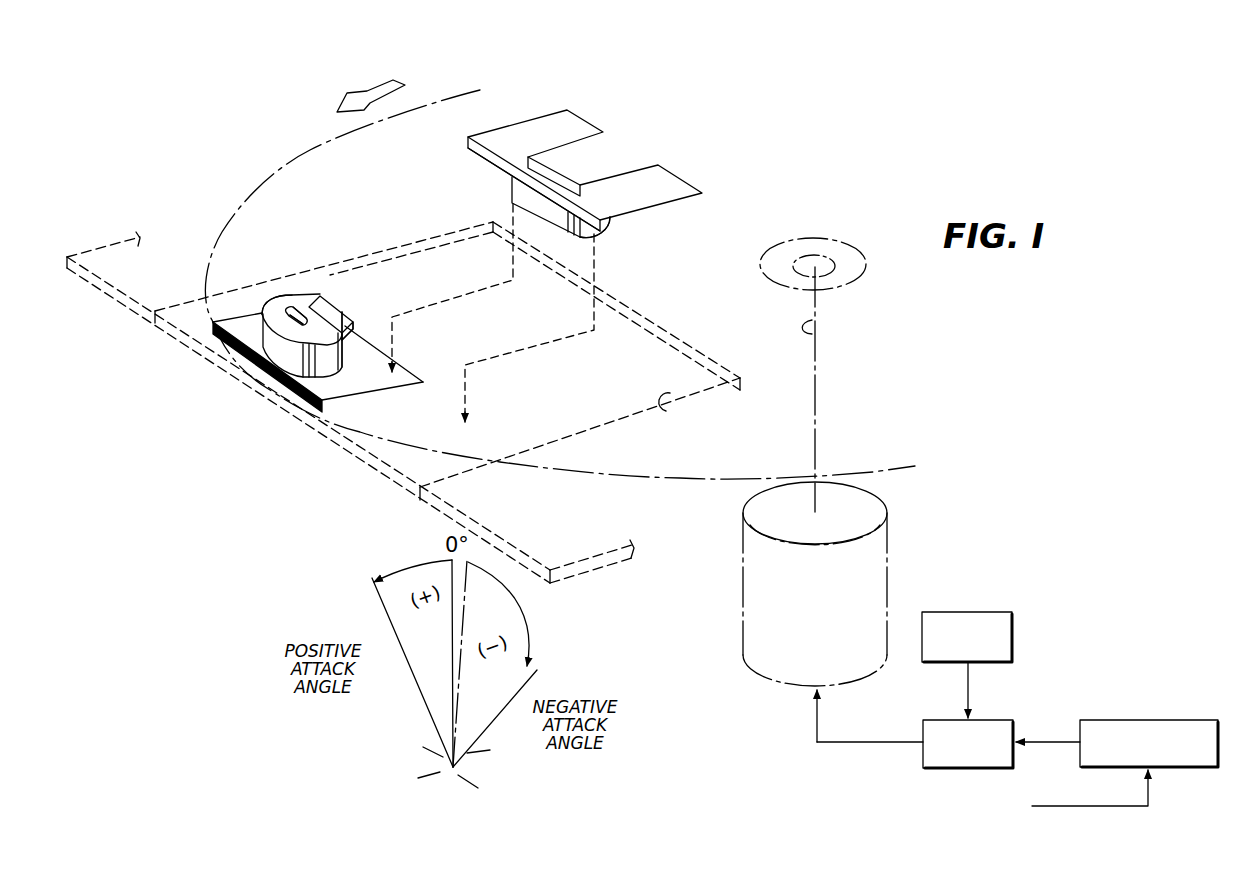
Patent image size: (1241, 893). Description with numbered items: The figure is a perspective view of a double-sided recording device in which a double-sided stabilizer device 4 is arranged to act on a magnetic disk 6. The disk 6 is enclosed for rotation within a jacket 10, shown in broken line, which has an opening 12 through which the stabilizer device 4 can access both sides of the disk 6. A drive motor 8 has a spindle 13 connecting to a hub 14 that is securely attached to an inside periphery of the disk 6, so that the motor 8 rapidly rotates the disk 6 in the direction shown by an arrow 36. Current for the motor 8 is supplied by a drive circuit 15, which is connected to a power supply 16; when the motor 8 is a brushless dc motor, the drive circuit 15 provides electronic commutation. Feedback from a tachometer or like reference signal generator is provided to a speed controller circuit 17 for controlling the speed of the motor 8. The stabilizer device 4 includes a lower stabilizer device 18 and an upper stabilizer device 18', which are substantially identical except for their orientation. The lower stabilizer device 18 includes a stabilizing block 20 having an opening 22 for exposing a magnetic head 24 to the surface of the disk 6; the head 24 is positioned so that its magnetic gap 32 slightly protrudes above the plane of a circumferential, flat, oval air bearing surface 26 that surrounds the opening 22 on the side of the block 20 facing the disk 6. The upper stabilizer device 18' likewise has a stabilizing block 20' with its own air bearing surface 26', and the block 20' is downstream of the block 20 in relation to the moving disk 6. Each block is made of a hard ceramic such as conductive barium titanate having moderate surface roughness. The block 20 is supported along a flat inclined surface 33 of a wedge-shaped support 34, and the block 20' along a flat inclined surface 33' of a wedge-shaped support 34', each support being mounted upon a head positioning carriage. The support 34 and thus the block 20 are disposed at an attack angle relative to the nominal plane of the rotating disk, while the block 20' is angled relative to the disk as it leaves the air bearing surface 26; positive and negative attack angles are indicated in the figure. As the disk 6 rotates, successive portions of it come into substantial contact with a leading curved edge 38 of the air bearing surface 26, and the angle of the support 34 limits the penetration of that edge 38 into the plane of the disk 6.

The double-sided stabilizer device 4 is at (385, 210).
The magnetic disk 6 is at (255, 182).
The drive motor 8 is at (870, 513).
The jacket 10 is at (130, 308).
The opening 12 is at (672, 416).
The spindle 13 is at (824, 332).
The hub 14 is at (812, 238).
The drive circuit 15 is at (1003, 720).
The power supply 16 is at (993, 613).
The speed controller circuit 17 is at (1147, 720).
The lower stabilizer device 18 is at (333, 331).
The upper stabilizer device 18' is at (581, 250).
The stabilizing block 20 is at (279, 352).
The stabilizing block 20' is at (526, 207).
The opening 22 is at (288, 303).
The magnetic head 24 is at (343, 335).
The air bearing surface 26 is at (282, 286).
The air bearing surface 26' is at (624, 248).
The magnetic gap 32 is at (311, 325).
The flat inclined surface 33 is at (380, 313).
The flat inclined surface 33' is at (505, 189).
The wedge-shaped support 34 is at (349, 307).
The wedge-shaped support 34' is at (585, 155).
The arrow 36 is at (345, 100).
The leading curved edge 38 is at (300, 312).